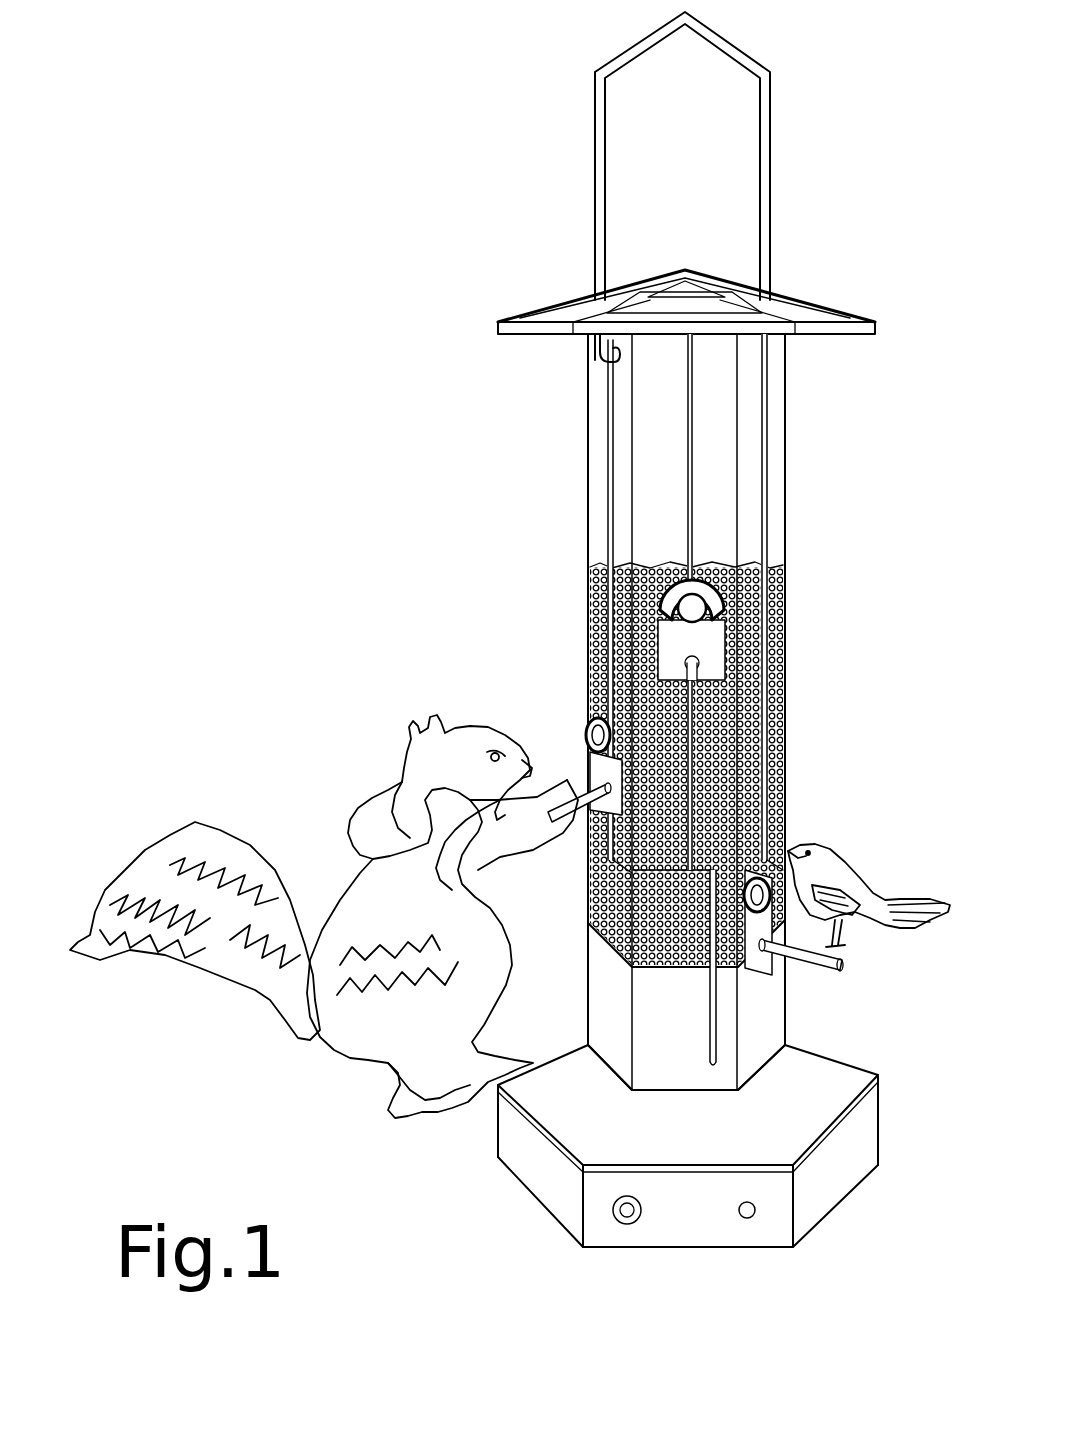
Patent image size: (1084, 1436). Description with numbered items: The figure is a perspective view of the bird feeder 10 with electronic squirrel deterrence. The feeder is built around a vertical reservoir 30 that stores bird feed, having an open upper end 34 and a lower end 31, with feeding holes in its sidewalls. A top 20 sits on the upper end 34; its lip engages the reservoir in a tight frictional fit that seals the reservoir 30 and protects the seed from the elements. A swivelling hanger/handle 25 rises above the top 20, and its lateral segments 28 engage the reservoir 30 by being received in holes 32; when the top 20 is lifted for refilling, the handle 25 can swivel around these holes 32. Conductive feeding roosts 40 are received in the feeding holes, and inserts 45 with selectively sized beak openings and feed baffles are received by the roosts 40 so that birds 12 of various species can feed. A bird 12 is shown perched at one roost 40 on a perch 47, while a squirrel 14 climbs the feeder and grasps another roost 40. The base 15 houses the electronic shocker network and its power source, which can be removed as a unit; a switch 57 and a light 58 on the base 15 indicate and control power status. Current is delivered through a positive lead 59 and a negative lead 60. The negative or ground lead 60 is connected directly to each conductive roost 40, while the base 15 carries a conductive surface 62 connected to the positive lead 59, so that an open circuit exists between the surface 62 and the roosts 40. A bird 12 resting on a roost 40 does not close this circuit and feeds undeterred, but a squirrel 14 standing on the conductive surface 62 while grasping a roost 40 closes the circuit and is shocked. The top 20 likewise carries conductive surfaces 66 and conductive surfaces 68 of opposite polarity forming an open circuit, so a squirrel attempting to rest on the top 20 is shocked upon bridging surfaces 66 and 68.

The bird feeder 10 is at (338, 307).
The bird 12 is at (835, 880).
The squirrel 14 is at (372, 812).
The base 15 is at (669, 1179).
The top 20 is at (720, 265).
The swivelling hanger/handle 25 is at (770, 70).
The lateral segment 28 is at (600, 358).
The reservoir 30 is at (714, 712).
The lower end 31 is at (605, 992).
The hole 32 is at (612, 362).
The upper end 34 is at (780, 338).
The conductive feeding roost 40 is at (720, 662).
The insert 45 is at (700, 590).
The perch 47 is at (793, 958).
The switch 57 is at (627, 1212).
The light 58 is at (747, 1215).
The positive lead 59 is at (768, 455).
The negative lead 60 is at (692, 410).
The conductive surface 62 is at (563, 1113).
The conductive surface 66 is at (722, 310).
The conductive surface 68 is at (675, 292).